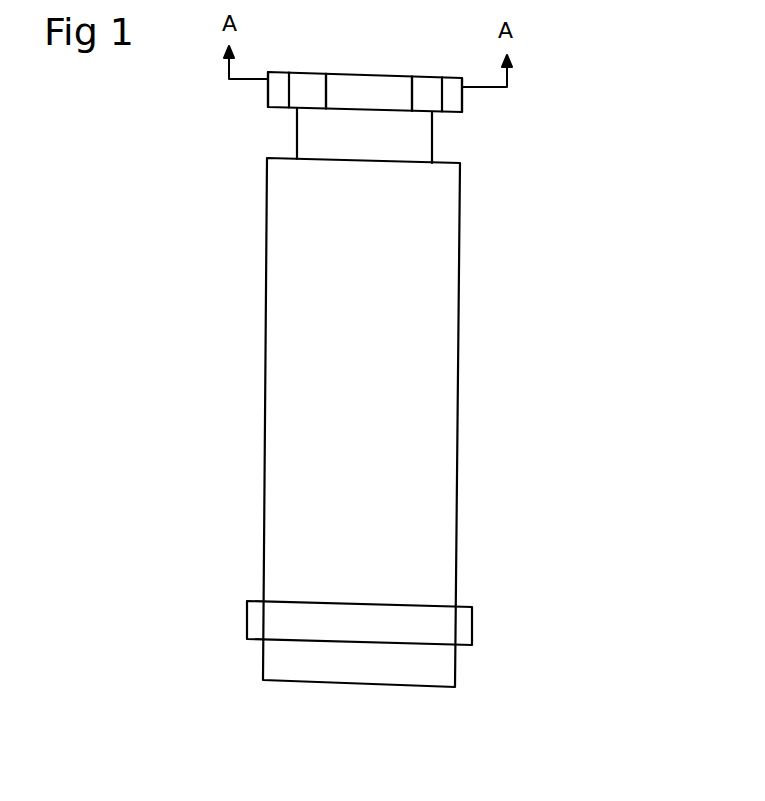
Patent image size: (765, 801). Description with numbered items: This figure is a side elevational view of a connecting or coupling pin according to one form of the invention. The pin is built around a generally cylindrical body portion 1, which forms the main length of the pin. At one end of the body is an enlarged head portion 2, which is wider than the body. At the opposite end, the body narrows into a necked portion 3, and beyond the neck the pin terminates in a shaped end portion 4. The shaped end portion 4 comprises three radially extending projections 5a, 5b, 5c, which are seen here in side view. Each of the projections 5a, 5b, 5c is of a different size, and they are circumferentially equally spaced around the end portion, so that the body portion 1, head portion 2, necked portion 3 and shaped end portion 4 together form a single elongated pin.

The cylindrical body portion 1 is at (430, 403).
The enlarged head portion 2 is at (247, 618).
The necked portion 3 is at (433, 137).
The shaped end portion 4 is at (370, 72).
The radially extending projection 5a is at (372, 88).
The radially extending projection 5b is at (463, 98).
The radially extending projection 5c is at (283, 86).